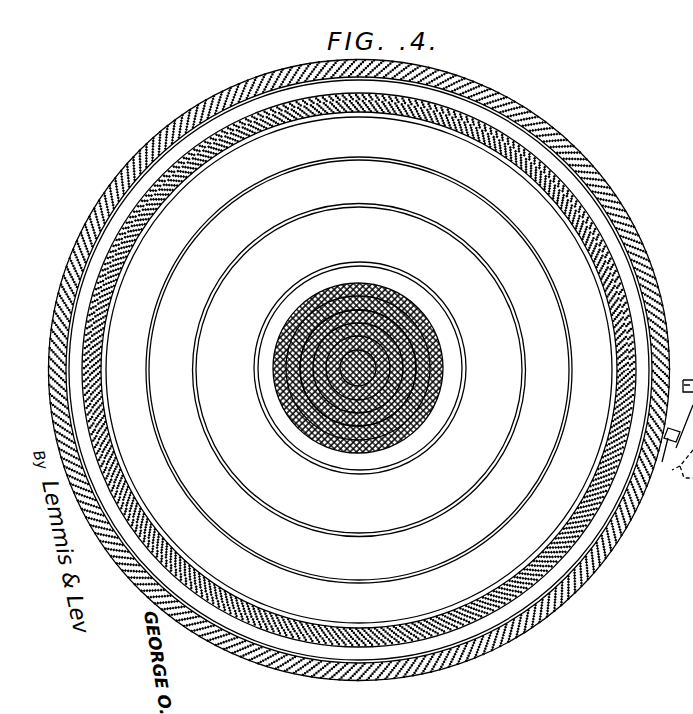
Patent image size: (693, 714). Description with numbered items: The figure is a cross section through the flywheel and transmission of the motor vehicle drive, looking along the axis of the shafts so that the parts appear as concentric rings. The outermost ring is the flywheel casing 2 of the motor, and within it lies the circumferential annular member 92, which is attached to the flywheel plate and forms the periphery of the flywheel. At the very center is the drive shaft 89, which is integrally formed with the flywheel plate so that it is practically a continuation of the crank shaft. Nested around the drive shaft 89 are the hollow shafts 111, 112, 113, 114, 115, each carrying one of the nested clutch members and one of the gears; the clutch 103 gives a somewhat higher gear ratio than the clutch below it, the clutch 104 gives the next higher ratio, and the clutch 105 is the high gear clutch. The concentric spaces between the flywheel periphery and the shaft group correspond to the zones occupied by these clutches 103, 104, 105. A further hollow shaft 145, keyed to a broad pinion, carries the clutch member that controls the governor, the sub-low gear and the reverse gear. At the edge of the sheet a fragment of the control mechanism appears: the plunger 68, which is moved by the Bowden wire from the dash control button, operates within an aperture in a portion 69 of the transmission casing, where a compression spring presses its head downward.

The flywheel casing 2 is at (151, 140).
The circumferential annular member 92 is at (593, 222).
The clutch 103 is at (359, 355).
The clutch 104 is at (359, 356).
The clutch 105 is at (360, 343).
The drive shaft 89 is at (355, 357).
The hollow shaft 111 is at (338, 362).
The hollow shaft 112 is at (317, 338).
The hollow shaft 113 is at (413, 377).
The hollow shaft 114 is at (425, 353).
The hollow shaft 115 is at (433, 332).
The hollow shaft 145 is at (303, 387).
The plunger 68 is at (676, 428).
The portion of the casing 69 is at (686, 470).